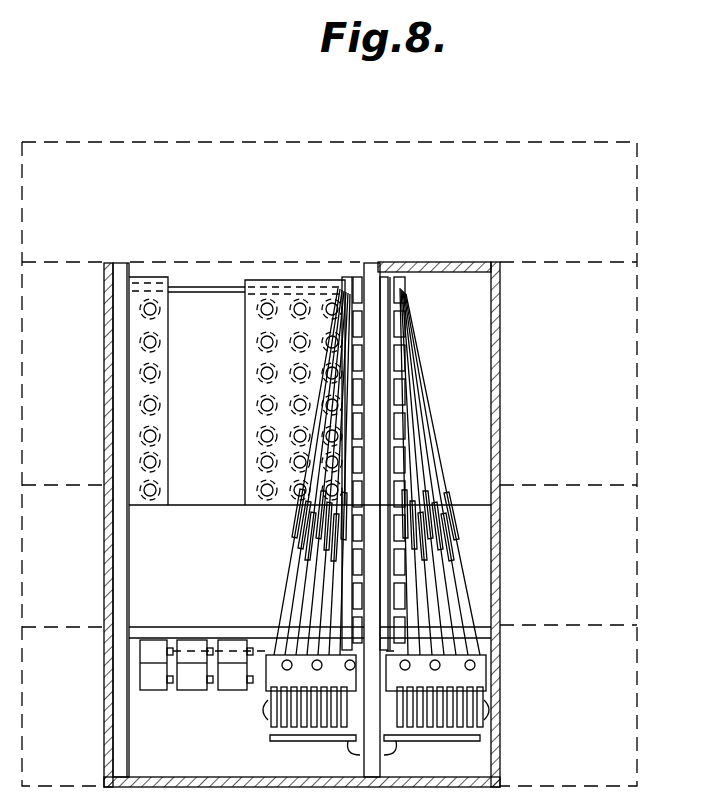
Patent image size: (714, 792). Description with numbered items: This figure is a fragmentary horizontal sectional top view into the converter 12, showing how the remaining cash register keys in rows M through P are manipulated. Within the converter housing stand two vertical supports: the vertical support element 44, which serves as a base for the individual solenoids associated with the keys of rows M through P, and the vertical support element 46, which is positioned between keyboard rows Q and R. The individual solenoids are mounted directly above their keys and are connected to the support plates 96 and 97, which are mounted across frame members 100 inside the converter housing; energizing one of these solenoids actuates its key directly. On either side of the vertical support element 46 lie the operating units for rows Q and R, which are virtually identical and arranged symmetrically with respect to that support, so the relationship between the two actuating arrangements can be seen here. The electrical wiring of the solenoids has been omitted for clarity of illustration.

The converter 12 is at (108, 578).
The vertical support element 44 is at (131, 585).
The vertical support element 46 is at (372, 264).
The support plate 96 is at (168, 372).
The support plate 97 is at (272, 372).
The frame members 100 is at (232, 287).